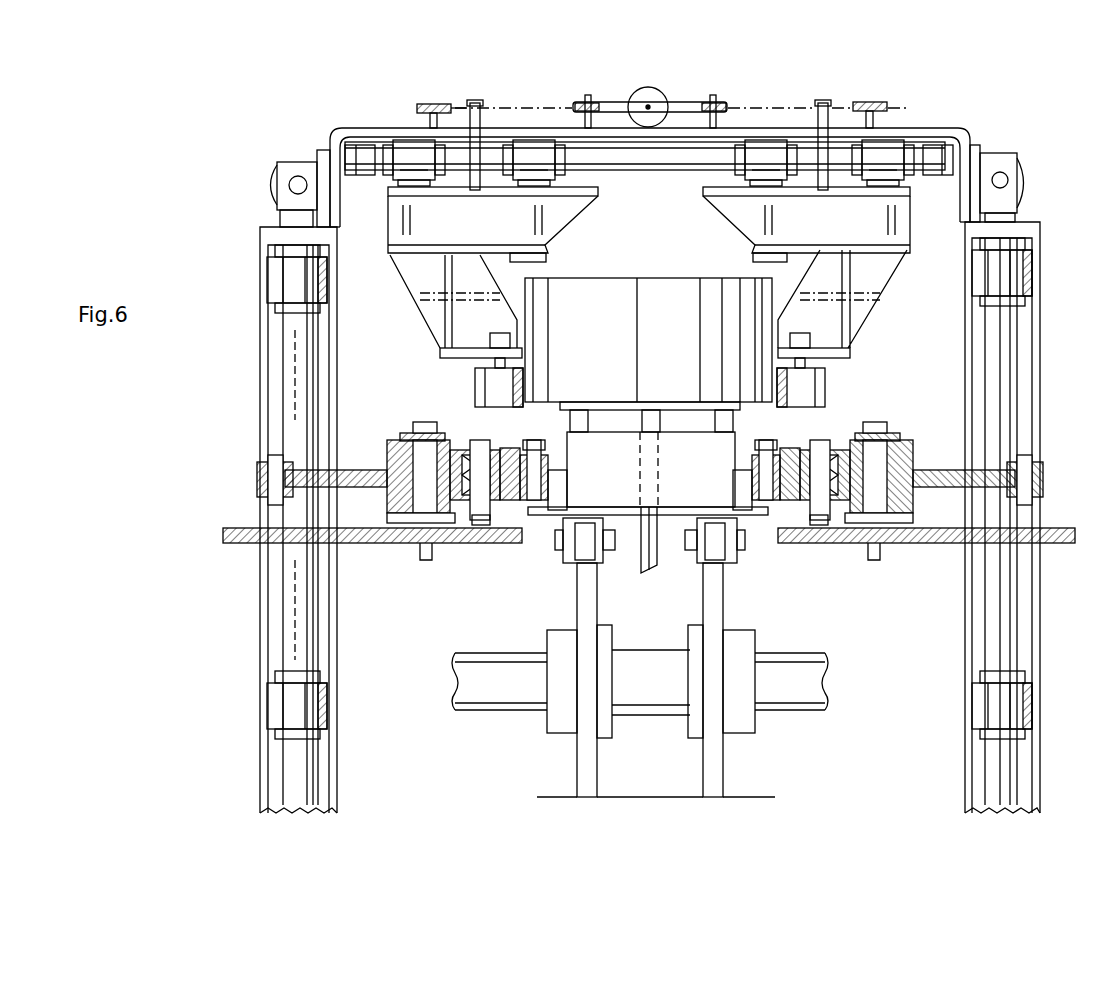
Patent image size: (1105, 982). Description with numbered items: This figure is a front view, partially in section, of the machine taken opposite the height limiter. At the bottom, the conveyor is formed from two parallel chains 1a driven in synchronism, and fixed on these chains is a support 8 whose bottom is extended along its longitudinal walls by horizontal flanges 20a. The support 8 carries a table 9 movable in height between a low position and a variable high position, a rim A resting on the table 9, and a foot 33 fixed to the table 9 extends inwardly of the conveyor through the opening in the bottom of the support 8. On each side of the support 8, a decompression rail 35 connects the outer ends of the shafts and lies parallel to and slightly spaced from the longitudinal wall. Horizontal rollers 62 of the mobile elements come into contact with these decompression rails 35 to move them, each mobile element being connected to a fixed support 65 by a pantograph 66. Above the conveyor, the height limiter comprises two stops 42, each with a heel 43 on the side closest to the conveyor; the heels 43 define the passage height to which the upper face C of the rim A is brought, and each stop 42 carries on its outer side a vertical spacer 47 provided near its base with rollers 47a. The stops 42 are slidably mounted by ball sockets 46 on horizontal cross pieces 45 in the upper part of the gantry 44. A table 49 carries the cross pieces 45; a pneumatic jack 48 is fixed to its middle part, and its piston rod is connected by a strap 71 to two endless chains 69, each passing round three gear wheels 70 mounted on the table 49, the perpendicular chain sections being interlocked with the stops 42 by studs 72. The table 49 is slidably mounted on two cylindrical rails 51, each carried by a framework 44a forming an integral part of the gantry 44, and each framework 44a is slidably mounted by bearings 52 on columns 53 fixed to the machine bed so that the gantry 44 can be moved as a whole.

The gantry 44 is at (704, 155).
The table 49 is at (926, 128).
The horizontal cross pieces 45 is at (672, 160).
The ball sockets 46 is at (420, 176).
The stud 72 is at (481, 128).
The gear wheels 70 is at (420, 106).
The endless chains 69 is at (519, 108).
The pneumatic jack 48 is at (640, 105).
The strap 71 is at (672, 108).
The cylindrical rails 51 is at (289, 185).
The framework 44a is at (262, 343).
The columns 53 is at (290, 385).
The bearings 52 is at (285, 280).
The stops 42 is at (557, 216).
The heel 43 is at (530, 262).
The vertical spacer 47 is at (428, 296).
The rollers 47a is at (485, 388).
The upper face C is at (648, 328).
The rim A is at (672, 365).
The table 9 is at (728, 410).
The support 8 is at (625, 457).
The foot 33 is at (660, 561).
The horizontal flanges 20a is at (537, 515).
The decompression rail 35 is at (562, 481).
The horizontal rollers 62 is at (512, 505).
The pantograph 66 is at (353, 489).
The fixed support 65 is at (232, 548).
The chains 1a is at (588, 548).